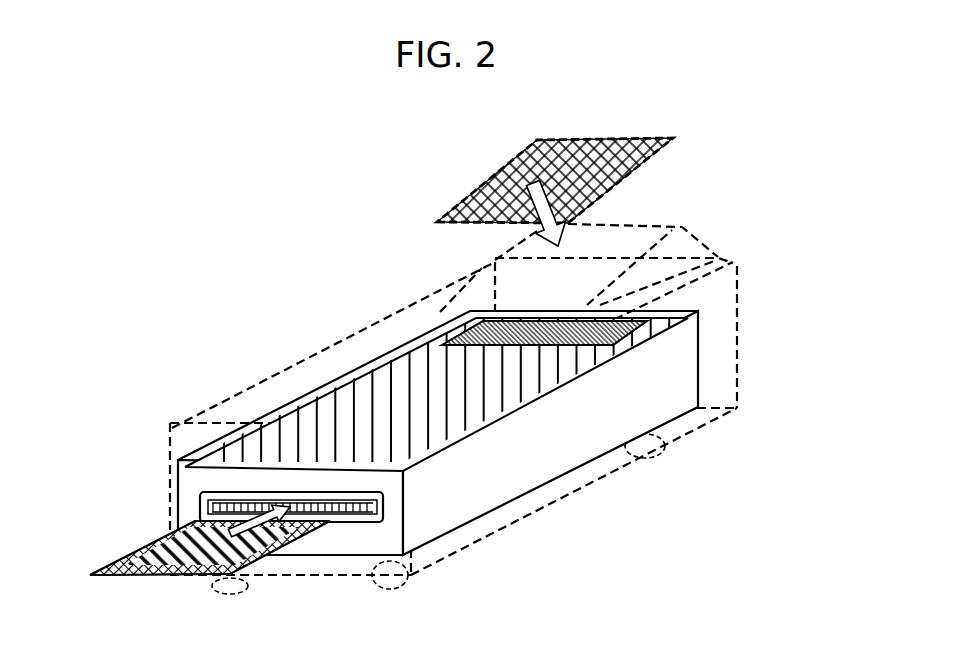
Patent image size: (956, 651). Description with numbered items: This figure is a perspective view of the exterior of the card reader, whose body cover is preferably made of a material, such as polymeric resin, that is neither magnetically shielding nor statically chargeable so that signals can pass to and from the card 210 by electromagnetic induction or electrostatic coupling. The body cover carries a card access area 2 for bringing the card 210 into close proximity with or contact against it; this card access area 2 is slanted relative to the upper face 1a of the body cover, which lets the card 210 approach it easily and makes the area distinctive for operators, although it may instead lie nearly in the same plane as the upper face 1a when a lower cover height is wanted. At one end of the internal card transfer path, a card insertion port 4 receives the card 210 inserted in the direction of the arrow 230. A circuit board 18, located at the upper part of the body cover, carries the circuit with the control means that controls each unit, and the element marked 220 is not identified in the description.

The upper face 1a is at (250, 410).
The card access area 2 is at (438, 422).
The circuit board 18 is at (380, 383).
The card insertion port 4 is at (348, 517).
The card 210 is at (376, 362).
The mesh sheet 220 is at (562, 170).
The arrow 230 is at (265, 555).